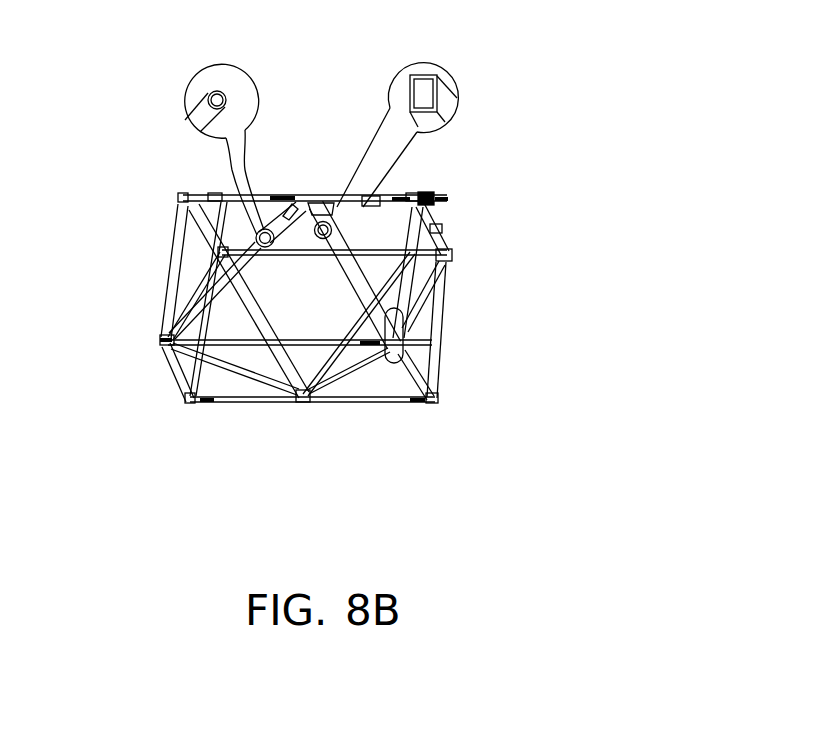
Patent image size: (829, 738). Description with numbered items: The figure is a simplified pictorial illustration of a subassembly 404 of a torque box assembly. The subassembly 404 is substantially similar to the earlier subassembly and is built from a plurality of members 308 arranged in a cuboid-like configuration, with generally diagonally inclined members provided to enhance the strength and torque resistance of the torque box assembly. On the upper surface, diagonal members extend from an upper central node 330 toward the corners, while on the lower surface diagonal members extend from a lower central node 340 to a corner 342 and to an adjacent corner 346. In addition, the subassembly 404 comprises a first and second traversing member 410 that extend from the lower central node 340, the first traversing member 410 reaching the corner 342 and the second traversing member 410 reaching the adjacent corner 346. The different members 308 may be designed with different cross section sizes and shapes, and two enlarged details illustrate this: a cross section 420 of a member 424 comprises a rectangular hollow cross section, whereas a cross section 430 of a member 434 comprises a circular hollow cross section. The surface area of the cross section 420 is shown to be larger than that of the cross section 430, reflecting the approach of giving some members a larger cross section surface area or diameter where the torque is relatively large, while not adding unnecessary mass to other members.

The members 308 is at (167, 315).
The upper central node 330 is at (288, 195).
The lower central node 340 is at (302, 410).
The corner 342 is at (178, 198).
The adjacent corner 346 is at (423, 192).
The subassembly 404 is at (219, 474).
The traversing member 410 is at (202, 198).
The cross section 420 is at (431, 75).
The member 424 is at (372, 199).
The cross section 430 is at (210, 92).
The member 434 is at (216, 197).